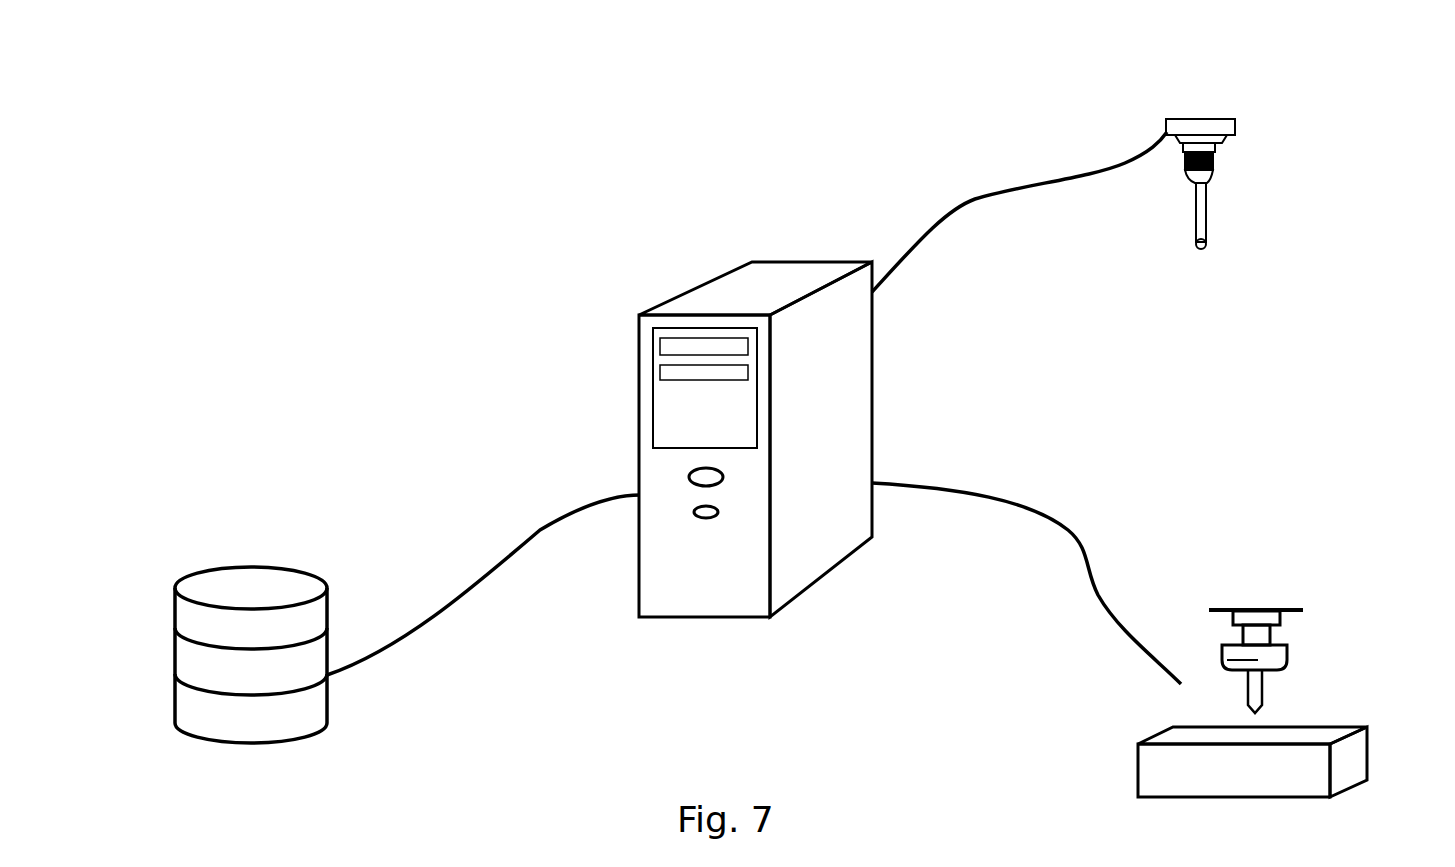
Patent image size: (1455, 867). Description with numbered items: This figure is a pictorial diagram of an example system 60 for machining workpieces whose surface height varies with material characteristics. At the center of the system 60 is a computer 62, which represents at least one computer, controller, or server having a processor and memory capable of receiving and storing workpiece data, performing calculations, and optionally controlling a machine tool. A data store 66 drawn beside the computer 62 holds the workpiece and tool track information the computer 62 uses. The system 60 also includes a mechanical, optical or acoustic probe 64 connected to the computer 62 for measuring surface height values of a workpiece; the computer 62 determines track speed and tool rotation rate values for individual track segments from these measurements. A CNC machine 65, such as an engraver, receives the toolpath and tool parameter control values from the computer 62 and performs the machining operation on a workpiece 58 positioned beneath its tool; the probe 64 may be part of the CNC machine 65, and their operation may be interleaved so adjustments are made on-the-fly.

The system 60 is at (513, 298).
The computer 62 is at (707, 618).
The probe 64 is at (1228, 128).
The CNC machine 65 is at (1353, 625).
The workpiece 58 is at (1360, 750).
The database 66 is at (175, 660).